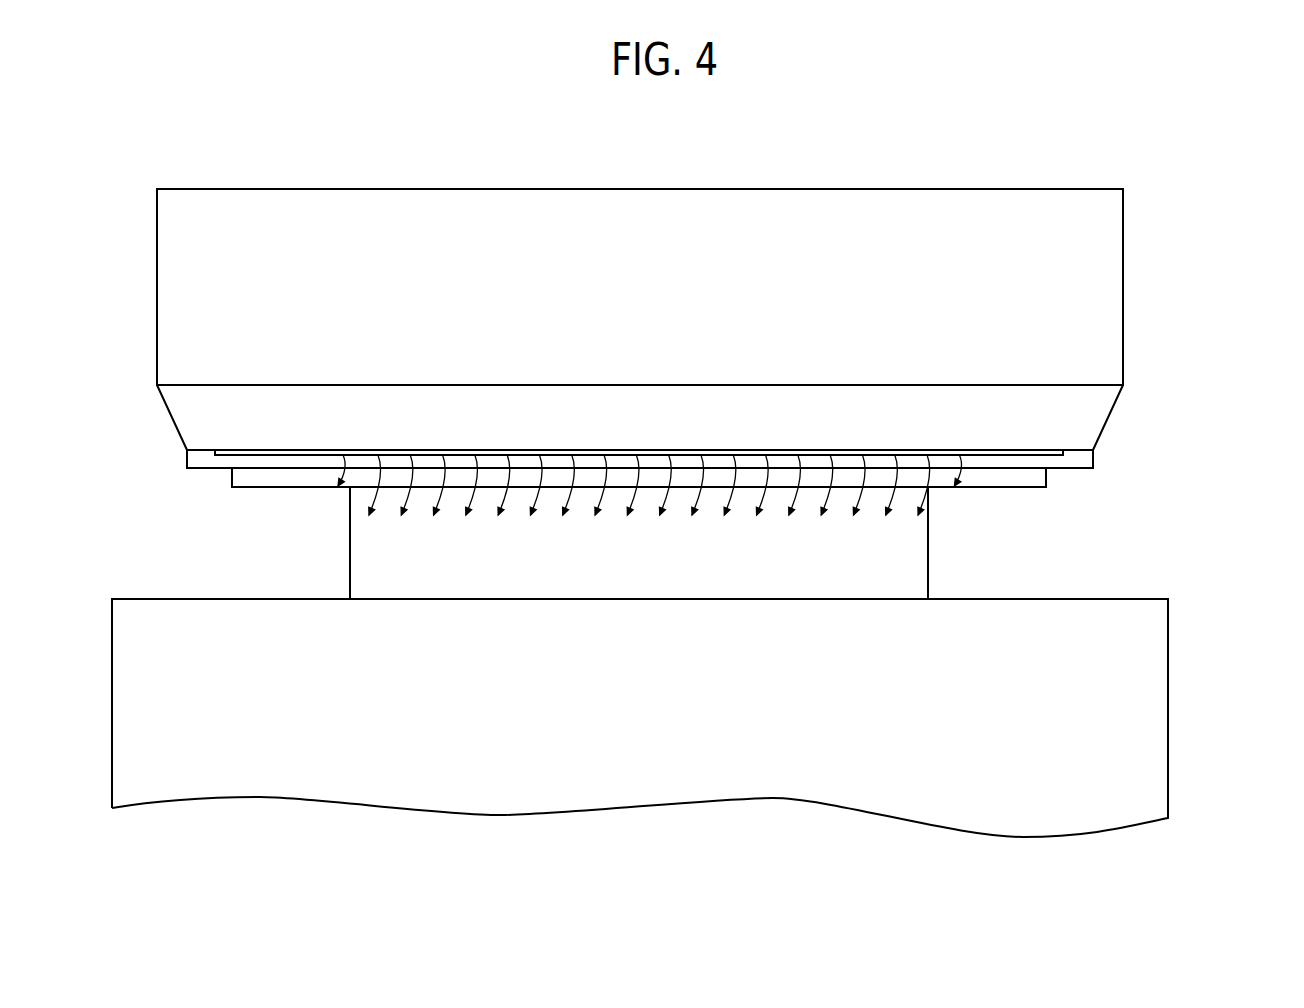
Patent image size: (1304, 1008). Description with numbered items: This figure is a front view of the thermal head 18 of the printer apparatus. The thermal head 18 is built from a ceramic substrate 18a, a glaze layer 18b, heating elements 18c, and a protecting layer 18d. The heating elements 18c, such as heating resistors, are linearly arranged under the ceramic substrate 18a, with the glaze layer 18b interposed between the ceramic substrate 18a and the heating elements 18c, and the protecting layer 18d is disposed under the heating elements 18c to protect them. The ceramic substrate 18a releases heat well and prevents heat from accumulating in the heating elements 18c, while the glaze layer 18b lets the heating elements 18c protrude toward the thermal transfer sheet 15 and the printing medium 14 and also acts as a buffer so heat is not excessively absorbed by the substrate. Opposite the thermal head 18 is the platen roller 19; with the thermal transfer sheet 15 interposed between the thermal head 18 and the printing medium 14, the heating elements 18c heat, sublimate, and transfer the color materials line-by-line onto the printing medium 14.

The thermal head 18 is at (1070, 132).
The ceramic substrate 18a is at (818, 200).
The glaze layer 18b is at (1093, 403).
The heating elements 18c is at (1037, 451).
The protecting layer 18d is at (1083, 459).
The thermal transfer sheet 15 is at (1040, 477).
The printing medium 14 is at (922, 580).
The platen roller 19 is at (1147, 672).